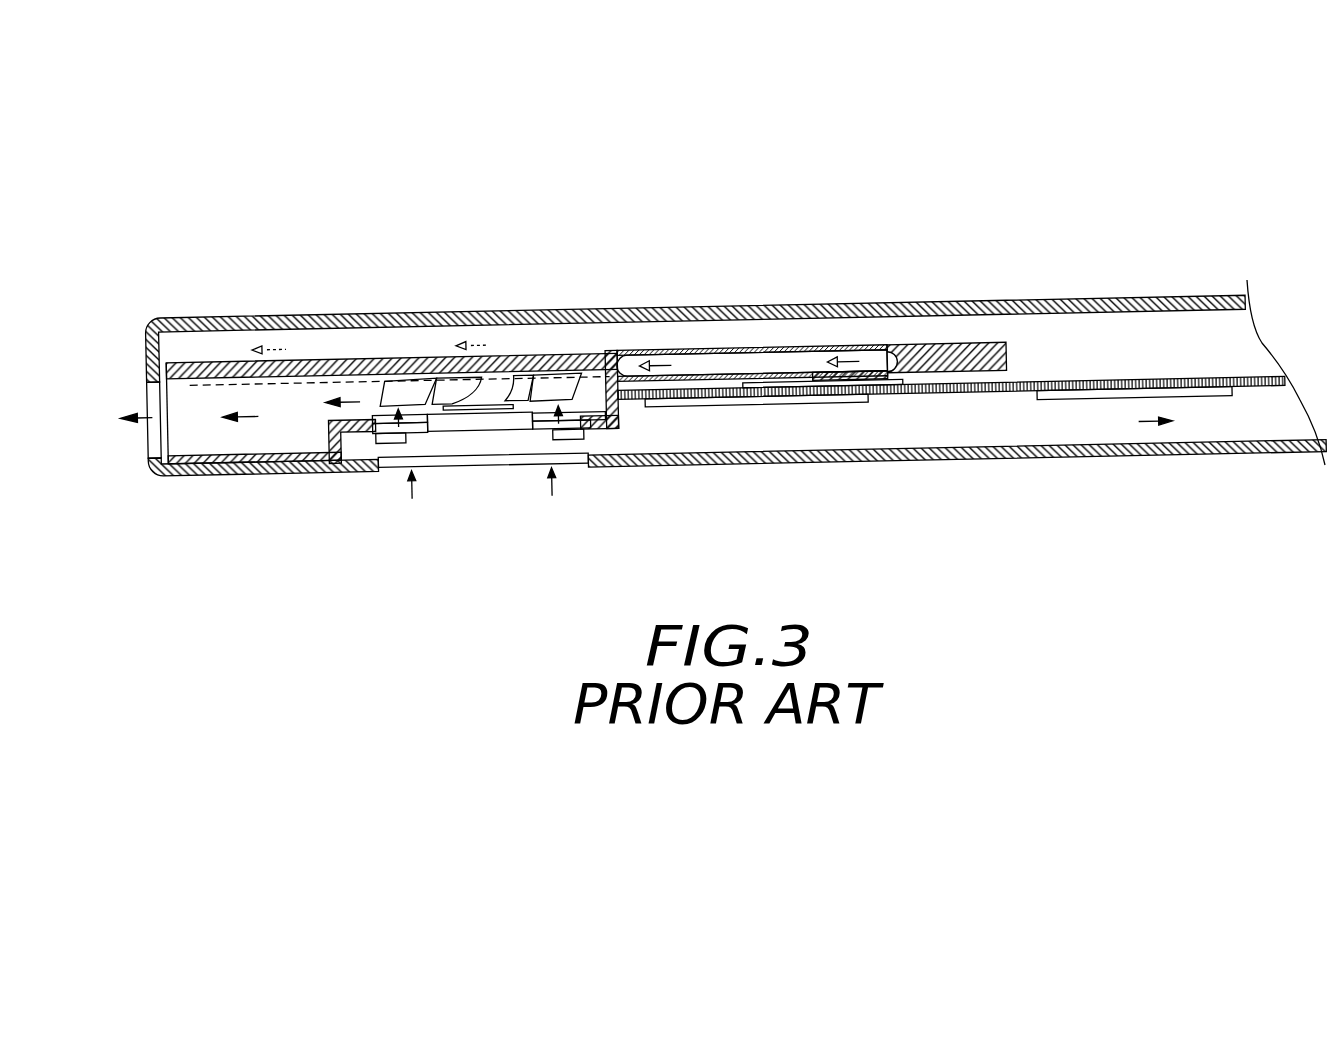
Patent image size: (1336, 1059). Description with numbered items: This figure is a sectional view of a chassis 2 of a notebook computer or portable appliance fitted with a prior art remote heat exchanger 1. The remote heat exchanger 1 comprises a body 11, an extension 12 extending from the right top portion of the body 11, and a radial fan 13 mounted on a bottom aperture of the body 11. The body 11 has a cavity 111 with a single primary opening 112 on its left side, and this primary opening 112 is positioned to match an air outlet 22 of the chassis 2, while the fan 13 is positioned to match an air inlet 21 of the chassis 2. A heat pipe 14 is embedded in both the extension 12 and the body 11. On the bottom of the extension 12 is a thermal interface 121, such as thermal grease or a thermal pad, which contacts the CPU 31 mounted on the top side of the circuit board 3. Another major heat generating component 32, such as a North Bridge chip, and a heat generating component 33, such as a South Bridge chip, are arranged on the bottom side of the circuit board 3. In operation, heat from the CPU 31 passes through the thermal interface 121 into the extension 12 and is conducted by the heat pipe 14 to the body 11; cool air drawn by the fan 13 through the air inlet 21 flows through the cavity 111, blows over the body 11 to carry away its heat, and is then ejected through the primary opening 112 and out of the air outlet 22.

The remote heat exchanger 1 is at (598, 352).
The body 11 is at (375, 359).
The cavity 111 is at (280, 426).
The primary opening 112 is at (180, 428).
The extension 12 is at (948, 344).
The thermal interface 121 is at (822, 351).
The fan 13 is at (487, 401).
The heat pipe 14 is at (243, 361).
The chassis 2 is at (1085, 297).
The air inlet 21 is at (511, 466).
The air outlet 22 is at (150, 402).
The circuit board 3 is at (1180, 383).
The CPU 31 is at (905, 394).
The heat generating component 32 is at (757, 398).
The heat generating component 33 is at (1117, 394).